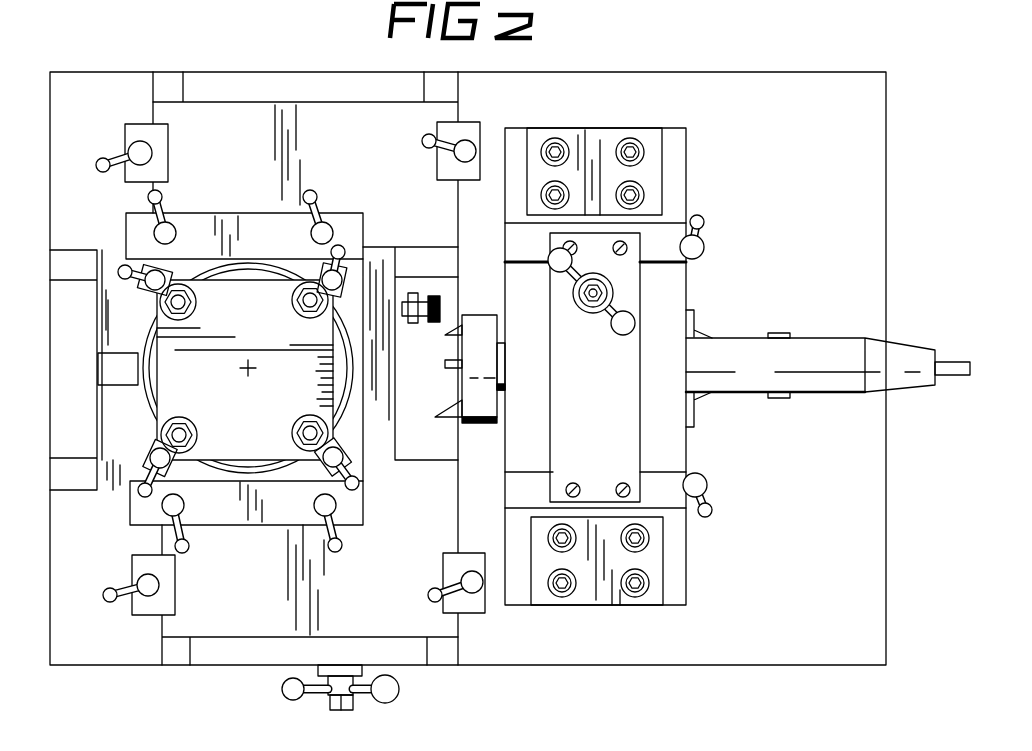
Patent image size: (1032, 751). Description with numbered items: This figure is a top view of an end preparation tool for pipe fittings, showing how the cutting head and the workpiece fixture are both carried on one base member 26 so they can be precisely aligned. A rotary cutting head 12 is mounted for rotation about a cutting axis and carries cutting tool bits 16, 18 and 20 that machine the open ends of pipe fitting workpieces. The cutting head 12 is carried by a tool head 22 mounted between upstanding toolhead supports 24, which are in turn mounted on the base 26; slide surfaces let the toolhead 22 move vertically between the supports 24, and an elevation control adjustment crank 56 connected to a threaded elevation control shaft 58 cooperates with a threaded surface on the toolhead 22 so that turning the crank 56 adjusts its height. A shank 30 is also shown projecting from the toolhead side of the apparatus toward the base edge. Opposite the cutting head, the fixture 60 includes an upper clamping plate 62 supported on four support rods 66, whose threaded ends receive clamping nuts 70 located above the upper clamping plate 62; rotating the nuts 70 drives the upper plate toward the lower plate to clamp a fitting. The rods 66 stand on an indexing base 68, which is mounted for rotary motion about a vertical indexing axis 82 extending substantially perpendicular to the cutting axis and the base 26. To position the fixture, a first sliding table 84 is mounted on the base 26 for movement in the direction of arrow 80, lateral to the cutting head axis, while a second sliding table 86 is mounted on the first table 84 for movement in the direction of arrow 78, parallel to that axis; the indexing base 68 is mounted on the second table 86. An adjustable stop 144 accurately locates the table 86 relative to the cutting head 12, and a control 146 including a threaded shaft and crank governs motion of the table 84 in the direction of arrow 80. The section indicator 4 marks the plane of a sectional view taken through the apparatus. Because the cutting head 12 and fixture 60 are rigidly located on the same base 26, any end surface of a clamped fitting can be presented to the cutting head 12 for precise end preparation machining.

The section line 4- 4 is at (470, 445).
The rotary cutting head 12 is at (470, 386).
The cutting tool bit 16 is at (447, 424).
The cutting tool bit 18 is at (447, 362).
The cutting tool bit 20 is at (448, 332).
The tool head 22 is at (683, 456).
The toolhead support 24 is at (674, 572).
The base member 26 is at (823, 594).
The shank 30 is at (833, 343).
The elevation control adjustment crank 56 is at (630, 312).
The threaded elevation control shaft 58 is at (591, 298).
The fixture 60 is at (248, 204).
The upper clamping plate 62 is at (211, 408).
The support rod 66 is at (198, 299).
The indexing base 68 is at (340, 338).
The clamping nut 70 is at (164, 308).
The arrow 78 is at (128, 429).
The arrow 80 is at (396, 147).
The vertical indexing axis 82 is at (250, 373).
The first sliding table 84 is at (268, 592).
The second sliding table 86 is at (372, 440).
The adjustable stop 144 is at (420, 290).
The control 146 is at (393, 690).